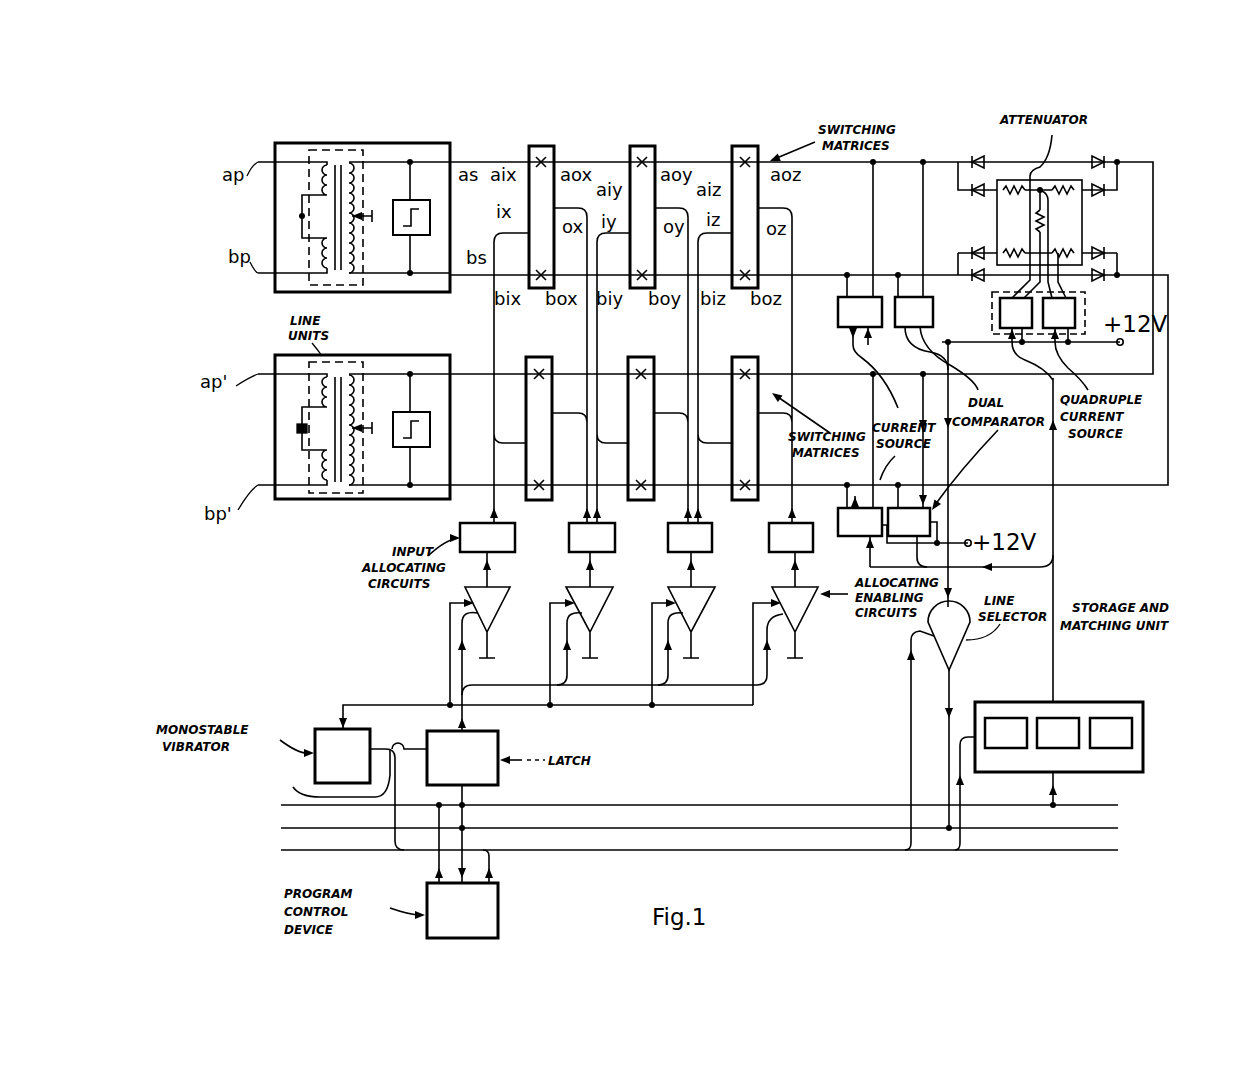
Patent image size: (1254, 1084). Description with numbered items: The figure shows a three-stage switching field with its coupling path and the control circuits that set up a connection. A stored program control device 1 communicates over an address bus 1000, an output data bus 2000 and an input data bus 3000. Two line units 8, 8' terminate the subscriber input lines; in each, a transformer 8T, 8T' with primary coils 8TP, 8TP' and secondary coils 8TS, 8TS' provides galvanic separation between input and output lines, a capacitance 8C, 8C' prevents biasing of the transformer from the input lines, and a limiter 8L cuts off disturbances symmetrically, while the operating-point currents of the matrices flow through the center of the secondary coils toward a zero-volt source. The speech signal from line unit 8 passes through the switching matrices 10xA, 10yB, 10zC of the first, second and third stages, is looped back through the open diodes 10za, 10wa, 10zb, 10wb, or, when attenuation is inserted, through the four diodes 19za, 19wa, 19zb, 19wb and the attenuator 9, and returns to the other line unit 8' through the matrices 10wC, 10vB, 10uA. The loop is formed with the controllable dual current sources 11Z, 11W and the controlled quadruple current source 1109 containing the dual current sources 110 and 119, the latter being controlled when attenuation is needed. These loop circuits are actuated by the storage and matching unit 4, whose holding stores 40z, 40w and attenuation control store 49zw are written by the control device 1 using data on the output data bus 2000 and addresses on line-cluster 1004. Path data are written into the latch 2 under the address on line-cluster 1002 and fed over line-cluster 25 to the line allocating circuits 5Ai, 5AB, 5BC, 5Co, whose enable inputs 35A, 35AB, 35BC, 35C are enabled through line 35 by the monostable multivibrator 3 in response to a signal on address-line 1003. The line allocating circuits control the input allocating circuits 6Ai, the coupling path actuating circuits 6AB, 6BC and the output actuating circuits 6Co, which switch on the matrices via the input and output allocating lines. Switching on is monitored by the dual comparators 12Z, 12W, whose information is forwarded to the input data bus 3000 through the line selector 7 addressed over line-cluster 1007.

The stored program control device 1 is at (462, 910).
The latch 2 is at (462, 758).
The monostable multivibrator 3 is at (342, 756).
The storage and matching unit 4 is at (1106, 696).
The line selector 7 is at (949, 716).
The line unit 8 is at (354, 196).
The line unit 8' is at (354, 408).
The primary coils 8TP is at (282, 213).
The primary coils 8TP' is at (262, 461).
The secondary coils 8TS is at (398, 189).
The secondary coils 8TS' is at (415, 401).
The transformer 8T is at (362, 236).
The transformer 8T' is at (344, 453).
The capacitance 8C is at (266, 214).
The capacitance 8C' is at (255, 447).
The limiter 8L is at (428, 202).
The attenuator 9 is at (1052, 176).
The switching matrix 10xA is at (541, 146).
The switching matrix 10yB is at (642, 146).
The switching matrix 10zC is at (745, 146).
The switching matrix 10uA is at (539, 357).
The switching matrix 10vB is at (641, 357).
The switching matrix 10wC is at (745, 357).
The diode 10za is at (978, 150).
The diode 10zb is at (978, 281).
The diode 10wa is at (1096, 158).
The diode 10wb is at (1098, 281).
The diode 19za is at (978, 196).
The diode 19zb is at (977, 248).
The diode 19wa is at (1098, 196).
The diode 19wb is at (1100, 240).
The controllable dual current source 11Z is at (862, 312).
The dual comparator 12Z is at (918, 312).
The controlled quadruple current source 1109 is at (992, 328).
The dual current source 110 is at (1023, 313).
The dual current source 119 is at (1066, 313).
The controllable dual current source 11W is at (865, 522).
The dual comparator 12W is at (915, 522).
The input allocating circuit 6Ai is at (487, 537).
The coupling path actuating circuit 6AB is at (593, 537).
The coupling path actuating circuit 6BC is at (692, 537).
The output actuating circuit 6Co is at (792, 537).
The line allocating circuit 5Ai is at (493, 622).
The line allocating circuit 5AB is at (596, 622).
The line allocating circuit 5BC is at (697, 622).
The line allocating circuit 5Co is at (802, 622).
The line allocating enable input 35A is at (466, 592).
The line allocating enable input 35AB is at (570, 592).
The line allocating enable input 35BC is at (673, 592).
The line allocating enable input 35C is at (777, 592).
The line 35 is at (338, 705).
The line allocating data input line-cluster 25 is at (468, 716).
The line-cluster 1002 is at (396, 750).
The address-line 1003 is at (315, 773).
The address bus 1000 is at (497, 850).
The output data bus 2000 is at (533, 805).
The input data bus 3000 is at (533, 828).
The line-cluster 1007 is at (910, 718).
The line-cluster 1004 is at (961, 725).
The holding store 40z is at (1007, 733).
The holding store 40w is at (1061, 733).
The attenuation control store 49zw is at (1126, 738).